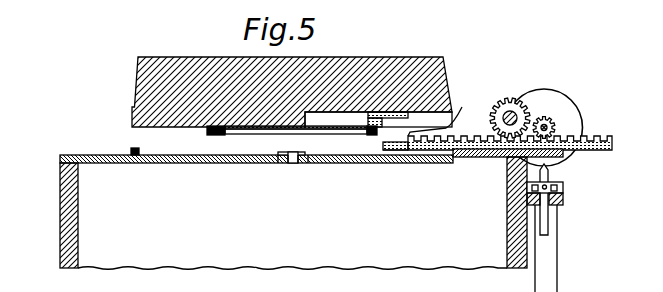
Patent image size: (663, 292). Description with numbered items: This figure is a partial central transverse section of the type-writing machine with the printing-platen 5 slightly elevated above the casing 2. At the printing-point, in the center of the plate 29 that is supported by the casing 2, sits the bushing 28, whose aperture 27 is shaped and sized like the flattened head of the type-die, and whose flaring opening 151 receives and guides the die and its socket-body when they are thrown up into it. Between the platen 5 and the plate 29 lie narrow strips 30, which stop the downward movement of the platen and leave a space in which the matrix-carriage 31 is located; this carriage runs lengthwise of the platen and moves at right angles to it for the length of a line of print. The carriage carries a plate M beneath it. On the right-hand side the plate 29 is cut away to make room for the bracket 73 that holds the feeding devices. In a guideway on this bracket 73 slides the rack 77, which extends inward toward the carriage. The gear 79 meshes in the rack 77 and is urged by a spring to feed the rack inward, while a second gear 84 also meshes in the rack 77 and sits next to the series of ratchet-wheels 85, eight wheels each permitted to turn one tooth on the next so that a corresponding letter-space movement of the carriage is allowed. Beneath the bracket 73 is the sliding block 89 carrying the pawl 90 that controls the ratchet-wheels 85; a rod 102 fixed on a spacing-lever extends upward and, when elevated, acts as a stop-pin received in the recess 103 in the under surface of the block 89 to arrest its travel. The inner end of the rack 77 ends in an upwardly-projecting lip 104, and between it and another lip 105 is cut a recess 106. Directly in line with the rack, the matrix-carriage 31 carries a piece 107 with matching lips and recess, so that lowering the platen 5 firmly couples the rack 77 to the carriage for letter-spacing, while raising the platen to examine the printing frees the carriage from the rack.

The casing 2 is at (282, 213).
The printing-platen 5 is at (192, 45).
The aperture 27 is at (294, 164).
The bushing 28 is at (283, 164).
The plate 29 is at (105, 168).
The narrow strips 30 is at (130, 148).
The matrix-carriage 31 is at (279, 136).
The contact plate M is at (232, 135).
The bracket 73 is at (475, 160).
The rack 77 is at (522, 146).
The gear 79 is at (502, 97).
The gear 84 is at (551, 121).
The series of ratchet-wheels 85 is at (612, 94).
The sliding block 89 is at (572, 184).
The pawl 90 is at (553, 172).
The rod 102 is at (560, 247).
The recess 103 is at (565, 190).
The upwardly-projecting lip 104 is at (396, 117).
The lip 105 is at (383, 144).
The recess 106 is at (408, 149).
The piece 107 is at (382, 113).
The flaring opening 151 is at (300, 164).